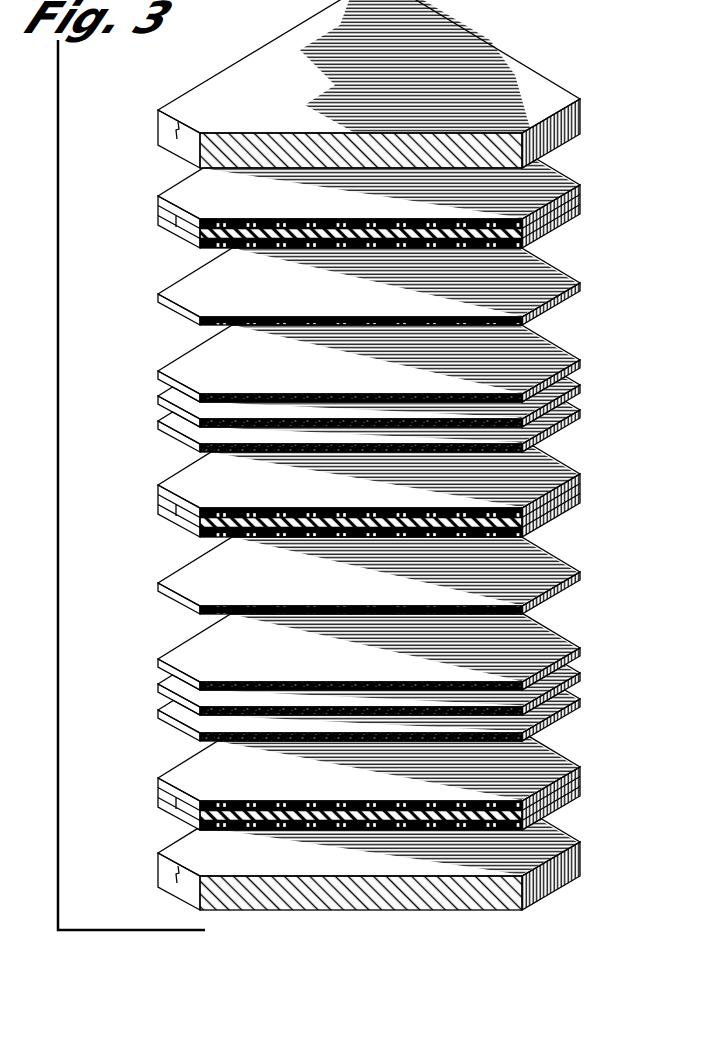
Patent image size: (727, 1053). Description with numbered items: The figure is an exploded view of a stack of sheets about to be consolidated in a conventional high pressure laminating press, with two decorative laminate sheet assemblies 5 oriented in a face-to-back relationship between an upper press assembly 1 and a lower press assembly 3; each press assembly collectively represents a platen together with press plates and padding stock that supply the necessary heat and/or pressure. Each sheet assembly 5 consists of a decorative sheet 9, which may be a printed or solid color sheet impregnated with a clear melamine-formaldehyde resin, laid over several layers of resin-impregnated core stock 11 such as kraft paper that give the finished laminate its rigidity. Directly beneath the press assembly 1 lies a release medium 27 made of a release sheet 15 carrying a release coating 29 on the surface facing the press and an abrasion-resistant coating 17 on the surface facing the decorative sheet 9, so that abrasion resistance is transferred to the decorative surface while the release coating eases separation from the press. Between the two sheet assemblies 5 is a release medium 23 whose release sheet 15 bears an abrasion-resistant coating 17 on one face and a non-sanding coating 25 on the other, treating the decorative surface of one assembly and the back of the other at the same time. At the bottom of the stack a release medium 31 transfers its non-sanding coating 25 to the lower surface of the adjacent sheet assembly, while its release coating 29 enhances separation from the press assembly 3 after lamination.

The press assembly 1 is at (580, 113).
The press assembly 3 is at (580, 858).
The decorative laminate sheet assembly 5 is at (147, 282).
The decorative sheet 9 is at (580, 283).
The core stock 11 is at (580, 412).
The release sheet 15 is at (580, 197).
The abrasion-resistant coating 17 is at (580, 205).
The release medium 23 is at (151, 502).
The non-sanding coating 25 is at (580, 472).
The release medium 27 is at (151, 212).
The release coating 29 is at (580, 190).
The release medium 31 is at (151, 790).